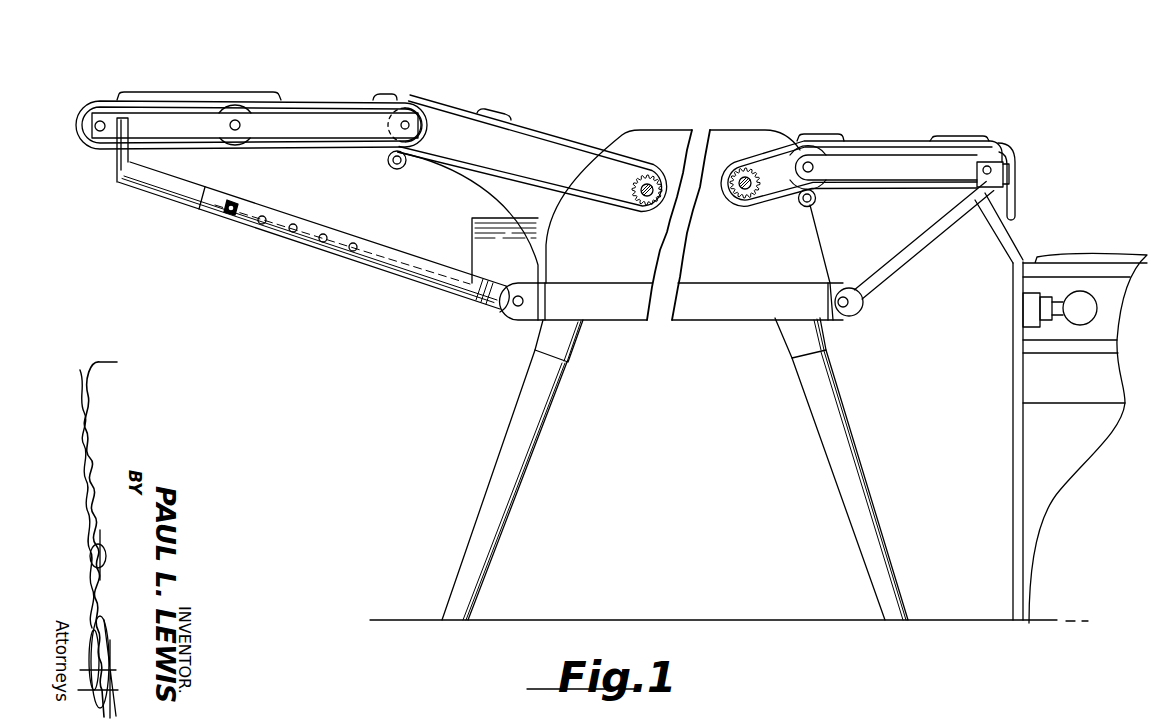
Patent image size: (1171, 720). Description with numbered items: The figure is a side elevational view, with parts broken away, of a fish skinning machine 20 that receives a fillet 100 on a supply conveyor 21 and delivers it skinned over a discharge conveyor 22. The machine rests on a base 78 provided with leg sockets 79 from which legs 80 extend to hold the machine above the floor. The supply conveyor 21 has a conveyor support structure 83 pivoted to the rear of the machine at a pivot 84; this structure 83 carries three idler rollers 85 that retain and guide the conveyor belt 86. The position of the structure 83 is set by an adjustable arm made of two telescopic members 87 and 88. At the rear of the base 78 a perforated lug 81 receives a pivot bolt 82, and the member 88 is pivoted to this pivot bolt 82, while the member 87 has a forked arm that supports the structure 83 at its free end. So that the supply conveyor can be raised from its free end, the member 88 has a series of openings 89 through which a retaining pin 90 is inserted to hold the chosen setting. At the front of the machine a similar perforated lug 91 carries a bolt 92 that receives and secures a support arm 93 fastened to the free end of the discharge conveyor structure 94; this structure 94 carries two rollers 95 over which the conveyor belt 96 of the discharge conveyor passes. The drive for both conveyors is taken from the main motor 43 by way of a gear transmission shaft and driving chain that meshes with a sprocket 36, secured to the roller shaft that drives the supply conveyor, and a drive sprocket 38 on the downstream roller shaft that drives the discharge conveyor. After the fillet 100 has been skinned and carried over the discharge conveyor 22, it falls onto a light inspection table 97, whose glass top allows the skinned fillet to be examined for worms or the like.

The fish skinning machine 20 is at (735, 78).
The supply conveyor 21 is at (323, 68).
The discharge conveyor 22 is at (918, 131).
The sprocket 36 is at (648, 185).
The drive sprocket 38 is at (745, 205).
The main motor 43 is at (480, 232).
The base 78 is at (726, 310).
The leg sockets 79 is at (575, 350).
The legs 80 is at (520, 448).
The perforated lug 81 is at (527, 312).
The pivot bolt 82 is at (519, 294).
The conveyor support structure 83 is at (300, 127).
The pivot 84 is at (407, 124).
The idler rollers 85 is at (235, 107).
The conveyor belt 86 is at (196, 148).
The telescopic member 87 is at (190, 204).
The telescopic member 88 is at (388, 268).
The openings 89 is at (294, 233).
The retaining pin 90 is at (233, 217).
The perforated lug 91 is at (854, 307).
The bolt 92 is at (844, 296).
The support arm 93 is at (920, 247).
The discharge conveyor structure 94 is at (816, 152).
The rollers 95 is at (1003, 148).
The conveyor belt 96 is at (838, 192).
The light inspection table 97 is at (1022, 332).
The fillet 100 is at (1067, 262).